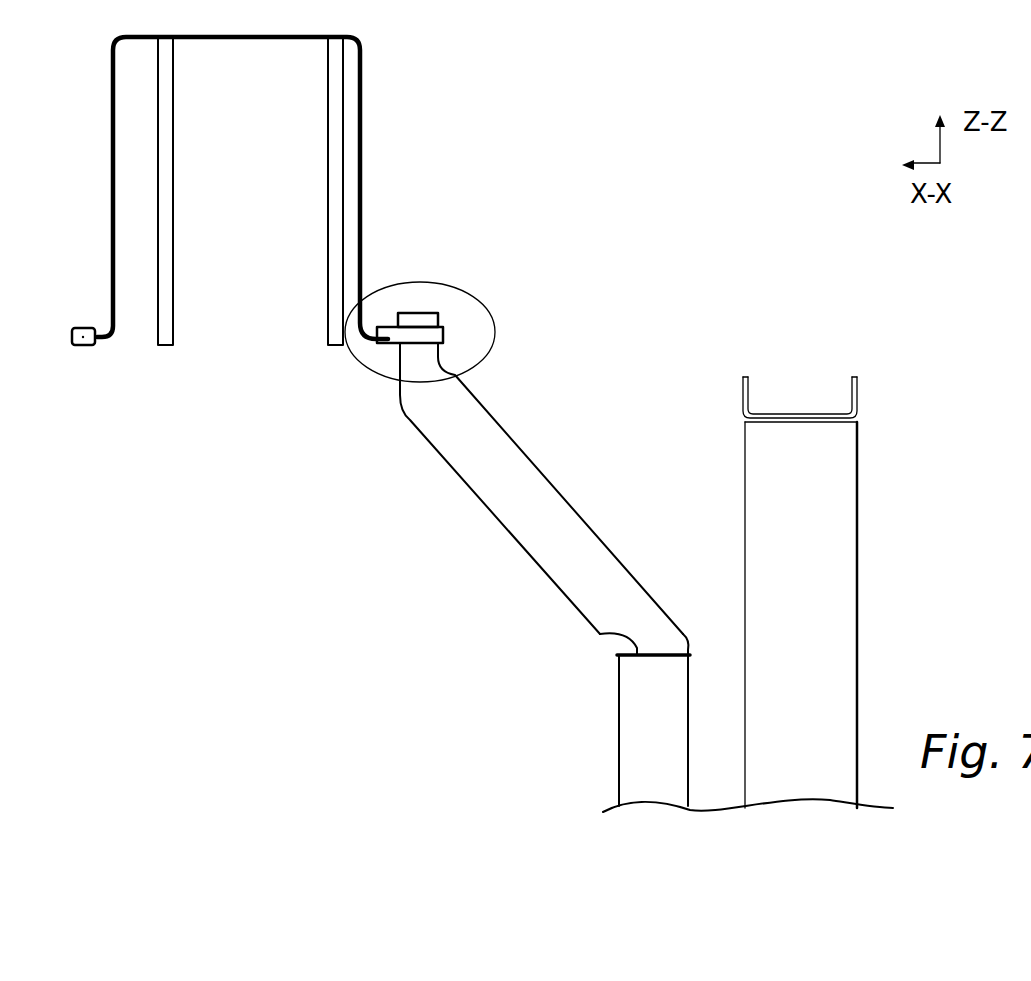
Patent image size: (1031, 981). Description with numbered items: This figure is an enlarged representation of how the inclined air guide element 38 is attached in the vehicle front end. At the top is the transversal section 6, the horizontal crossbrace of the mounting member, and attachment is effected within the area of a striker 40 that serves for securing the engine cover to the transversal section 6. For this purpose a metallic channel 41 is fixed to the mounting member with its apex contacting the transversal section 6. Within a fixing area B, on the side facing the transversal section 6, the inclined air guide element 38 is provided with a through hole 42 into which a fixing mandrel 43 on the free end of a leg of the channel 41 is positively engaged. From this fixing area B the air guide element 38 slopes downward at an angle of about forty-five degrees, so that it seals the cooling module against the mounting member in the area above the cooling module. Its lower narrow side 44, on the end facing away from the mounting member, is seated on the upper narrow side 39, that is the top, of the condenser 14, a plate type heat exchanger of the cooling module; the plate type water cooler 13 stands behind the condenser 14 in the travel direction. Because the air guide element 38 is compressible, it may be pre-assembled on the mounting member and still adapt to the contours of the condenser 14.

The striker 40 is at (108, 383).
The metallic channel 41 is at (363, 128).
The transversal section 6 is at (175, 325).
The through hole 42 is at (423, 317).
The fixing mandrel 43 is at (413, 343).
The inclined air guide element 38 is at (570, 498).
The lower narrow side 44 is at (670, 655).
The upper narrow side 39 is at (596, 637).
The condenser 14 is at (618, 740).
The water cooler 13 is at (852, 650).
The fixing area B is at (485, 300).